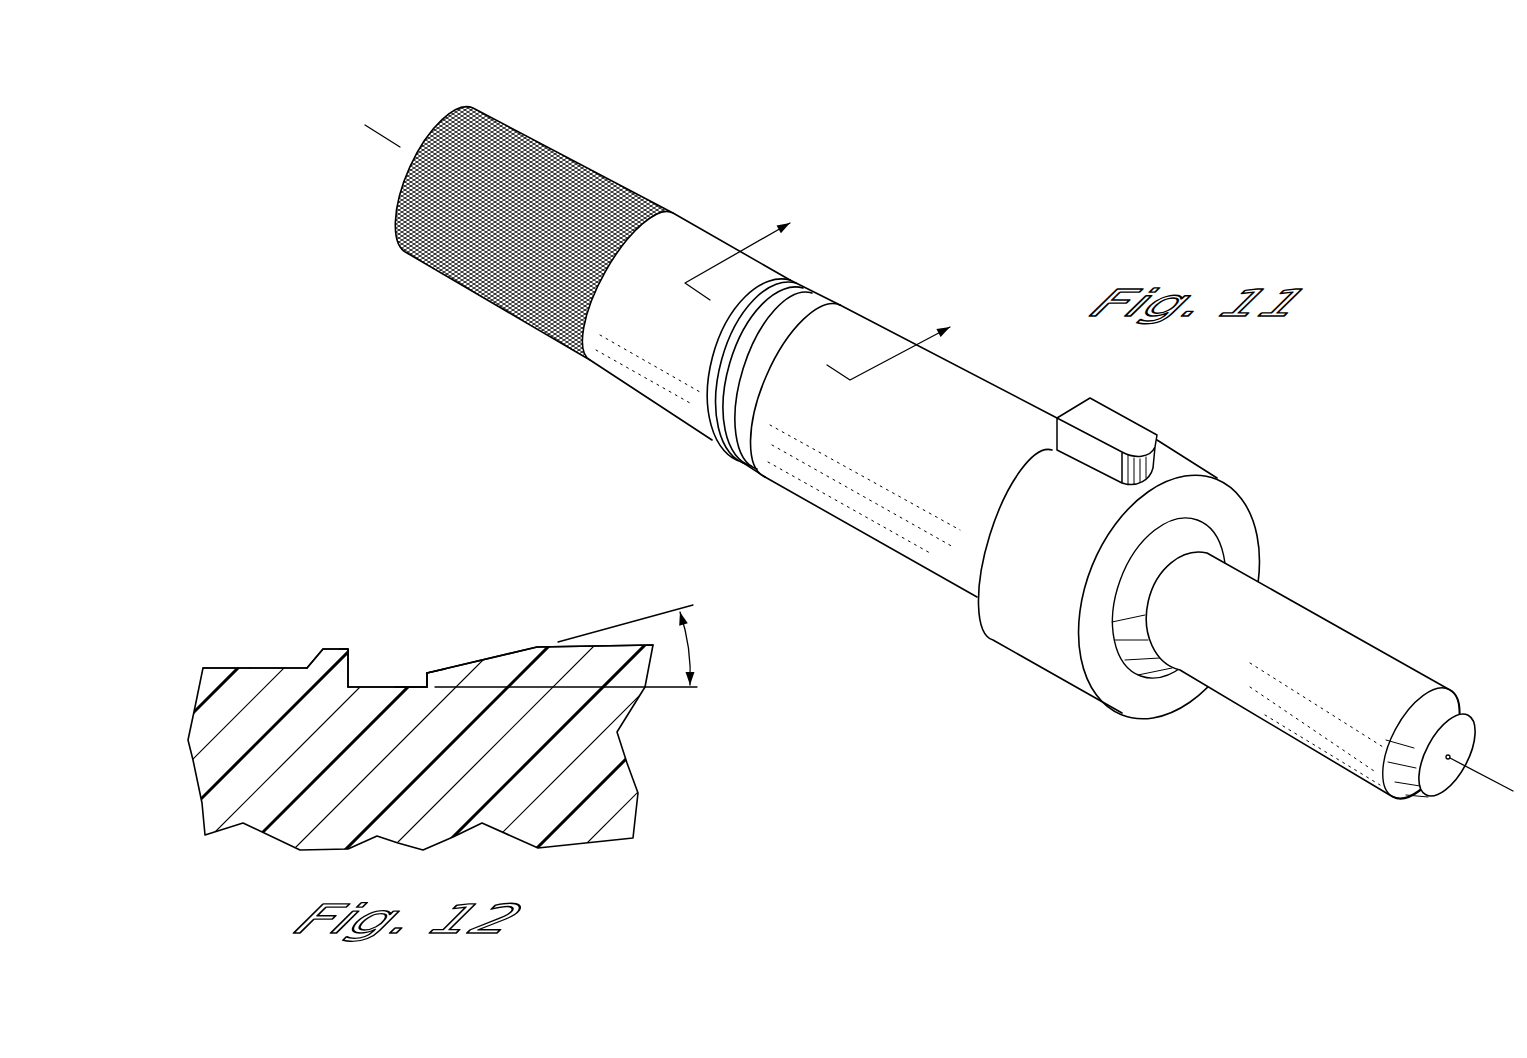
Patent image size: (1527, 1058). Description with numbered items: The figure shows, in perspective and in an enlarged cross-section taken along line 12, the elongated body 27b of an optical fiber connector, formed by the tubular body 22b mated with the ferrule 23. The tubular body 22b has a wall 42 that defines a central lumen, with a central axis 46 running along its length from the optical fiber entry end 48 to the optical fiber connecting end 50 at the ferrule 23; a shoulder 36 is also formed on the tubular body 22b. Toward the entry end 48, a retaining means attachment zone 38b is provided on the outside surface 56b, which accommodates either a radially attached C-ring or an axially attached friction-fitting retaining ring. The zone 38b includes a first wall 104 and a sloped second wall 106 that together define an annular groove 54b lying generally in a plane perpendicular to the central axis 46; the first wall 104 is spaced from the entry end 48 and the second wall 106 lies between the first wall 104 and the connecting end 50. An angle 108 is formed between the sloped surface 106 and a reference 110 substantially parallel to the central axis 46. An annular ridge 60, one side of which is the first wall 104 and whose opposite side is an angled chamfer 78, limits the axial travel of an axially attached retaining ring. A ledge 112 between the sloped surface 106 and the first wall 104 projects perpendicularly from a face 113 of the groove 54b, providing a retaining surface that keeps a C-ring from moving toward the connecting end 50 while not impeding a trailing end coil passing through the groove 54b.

In FIG. 11, the optical fiber entry end 48 is at (435, 122).
In FIG. 11, the central axis 46 is at (382, 137).
In FIG. 11, the tubular body 22b is at (717, 227).
In FIG. 11, the section line 12 is at (833, 286).
In FIG. 11, the first wall 104 is at (818, 296).
In FIG. 12, the first wall 104 is at (353, 670).
In FIG. 11, the annular groove 54b is at (813, 297).
In FIG. 12, the annular groove 54b is at (382, 650).
In FIG. 11, the elongated body 27b is at (993, 217).
In FIG. 11, the annular ridge 60 is at (730, 327).
In FIG. 12, the annular ridge 60 is at (337, 647).
In FIG. 11, the second wall 106 is at (790, 327).
In FIG. 12, the second wall 106 is at (510, 650).
In FIG. 11, the shoulder 36 is at (1200, 460).
In FIG. 11, the retaining means attachment zone 38b is at (730, 470).
In FIG. 12, the retaining means attachment zone 38b is at (403, 550).
In FIG. 11, the ferrule 23 is at (1315, 610).
In FIG. 11, the optical fiber connecting end 50 is at (1463, 730).
In FIG. 12, the face of the annular groove 113 is at (392, 677).
In FIG. 12, the chamfer 78 is at (310, 667).
In FIG. 12, the ledge 112 is at (425, 680).
In FIG. 12, the outside surface 56b is at (225, 667).
In FIG. 12, the angle 108 is at (687, 643).
In FIG. 12, the reference 110 is at (657, 690).
In FIG. 12, the wall 42 is at (610, 817).